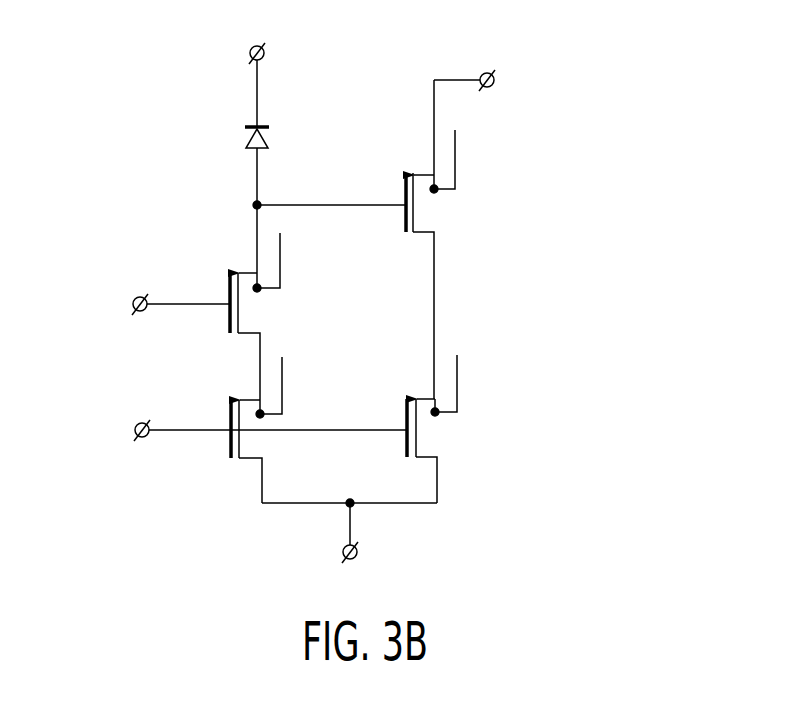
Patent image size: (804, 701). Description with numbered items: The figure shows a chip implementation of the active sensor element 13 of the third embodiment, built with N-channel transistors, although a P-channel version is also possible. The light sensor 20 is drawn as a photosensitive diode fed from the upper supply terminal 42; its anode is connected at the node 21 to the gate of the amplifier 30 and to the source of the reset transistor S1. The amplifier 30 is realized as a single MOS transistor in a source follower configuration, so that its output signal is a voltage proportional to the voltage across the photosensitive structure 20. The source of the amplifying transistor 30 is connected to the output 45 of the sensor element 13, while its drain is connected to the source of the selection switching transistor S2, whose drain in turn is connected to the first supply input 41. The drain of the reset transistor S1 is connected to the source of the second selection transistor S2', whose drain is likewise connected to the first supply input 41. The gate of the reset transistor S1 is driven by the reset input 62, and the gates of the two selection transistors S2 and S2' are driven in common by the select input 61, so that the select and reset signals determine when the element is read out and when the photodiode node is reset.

The sensor element 13 is at (592, 93).
The supply voltage terminal VDD 42 is at (252, 45).
The light sensor 20 is at (246, 140).
The node 21 is at (291, 176).
The amplifier 30 is at (404, 228).
The output 45 is at (495, 81).
The reset transistor S1 is at (227, 327).
The reset input 62 is at (131, 302).
The second selection transistor S2' is at (230, 430).
The select input 61 is at (133, 428).
The selection switching transistor S2 is at (407, 429).
The first supply input 41 is at (342, 549).